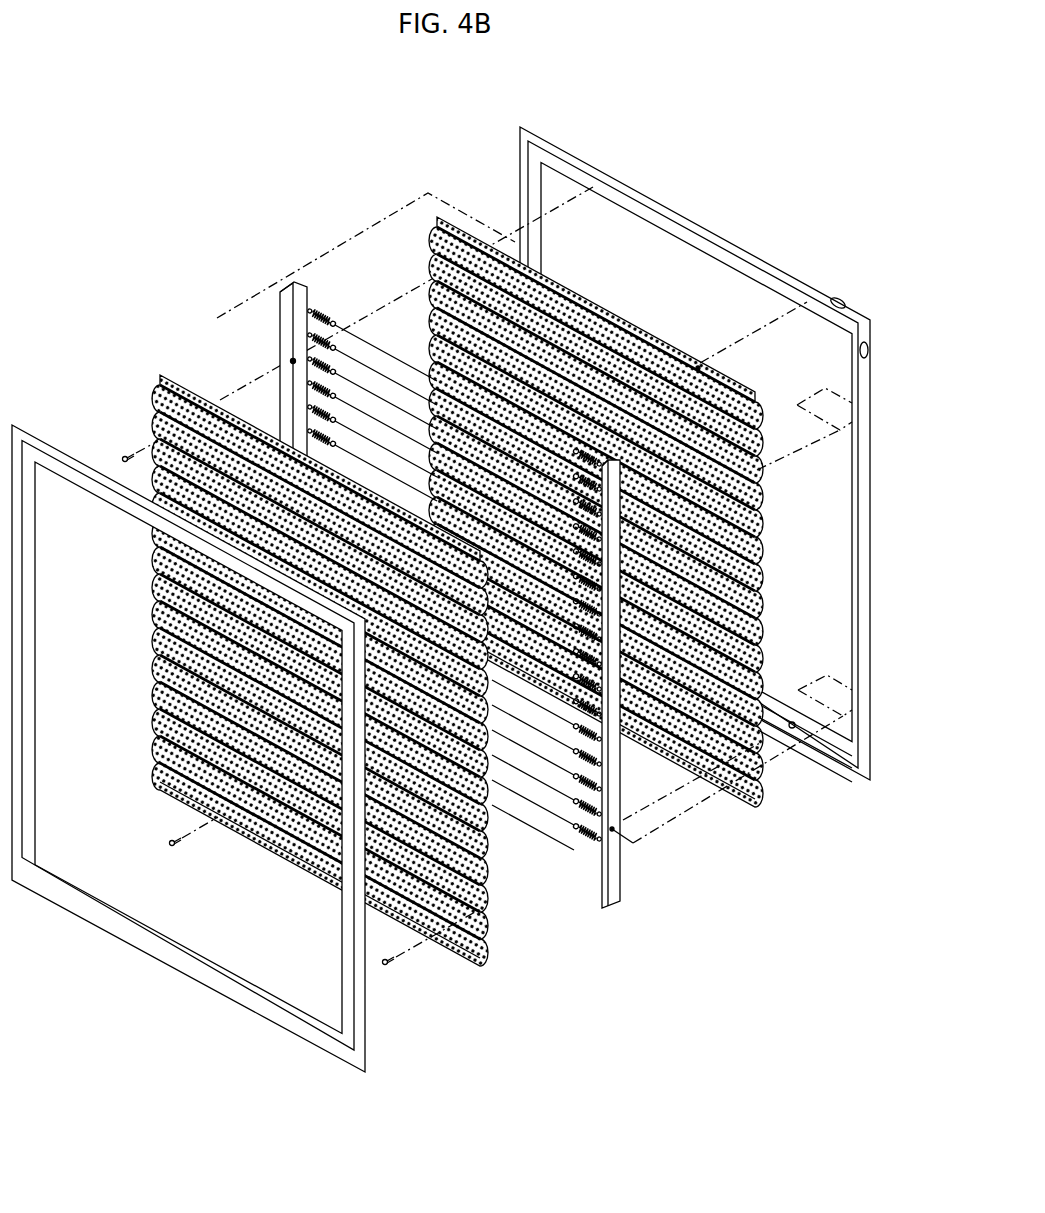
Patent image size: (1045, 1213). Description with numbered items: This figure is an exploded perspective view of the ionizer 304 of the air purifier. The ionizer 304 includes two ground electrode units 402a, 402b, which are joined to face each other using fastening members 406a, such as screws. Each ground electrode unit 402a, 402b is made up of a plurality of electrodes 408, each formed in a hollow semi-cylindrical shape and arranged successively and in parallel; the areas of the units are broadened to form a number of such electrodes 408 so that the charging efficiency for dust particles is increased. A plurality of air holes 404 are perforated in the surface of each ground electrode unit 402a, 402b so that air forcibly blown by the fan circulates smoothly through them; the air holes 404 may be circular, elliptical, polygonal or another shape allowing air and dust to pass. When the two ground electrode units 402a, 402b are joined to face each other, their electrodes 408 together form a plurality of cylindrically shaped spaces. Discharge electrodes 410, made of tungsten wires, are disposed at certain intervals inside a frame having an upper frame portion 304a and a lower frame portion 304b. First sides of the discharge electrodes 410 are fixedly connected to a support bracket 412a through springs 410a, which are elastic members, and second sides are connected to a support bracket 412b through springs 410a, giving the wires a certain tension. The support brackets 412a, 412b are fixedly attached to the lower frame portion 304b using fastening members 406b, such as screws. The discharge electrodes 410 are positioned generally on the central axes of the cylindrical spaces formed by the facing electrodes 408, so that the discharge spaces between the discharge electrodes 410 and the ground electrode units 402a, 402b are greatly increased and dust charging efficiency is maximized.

The ionizer 304 is at (180, 177).
The upper frame portion 304a is at (42, 428).
The lower frame portion 304b is at (684, 218).
The ground electrode unit 402a is at (172, 376).
The ground electrode unit 402b is at (437, 215).
The air holes 404 is at (160, 403).
The fastening members 406a is at (392, 966).
The fastening members 406b is at (283, 363).
The electrodes 408 is at (158, 586).
The discharge electrodes 410 is at (366, 340).
The springs 410a is at (320, 320).
The support bracket 412a is at (288, 312).
The support bracket 412b is at (616, 881).